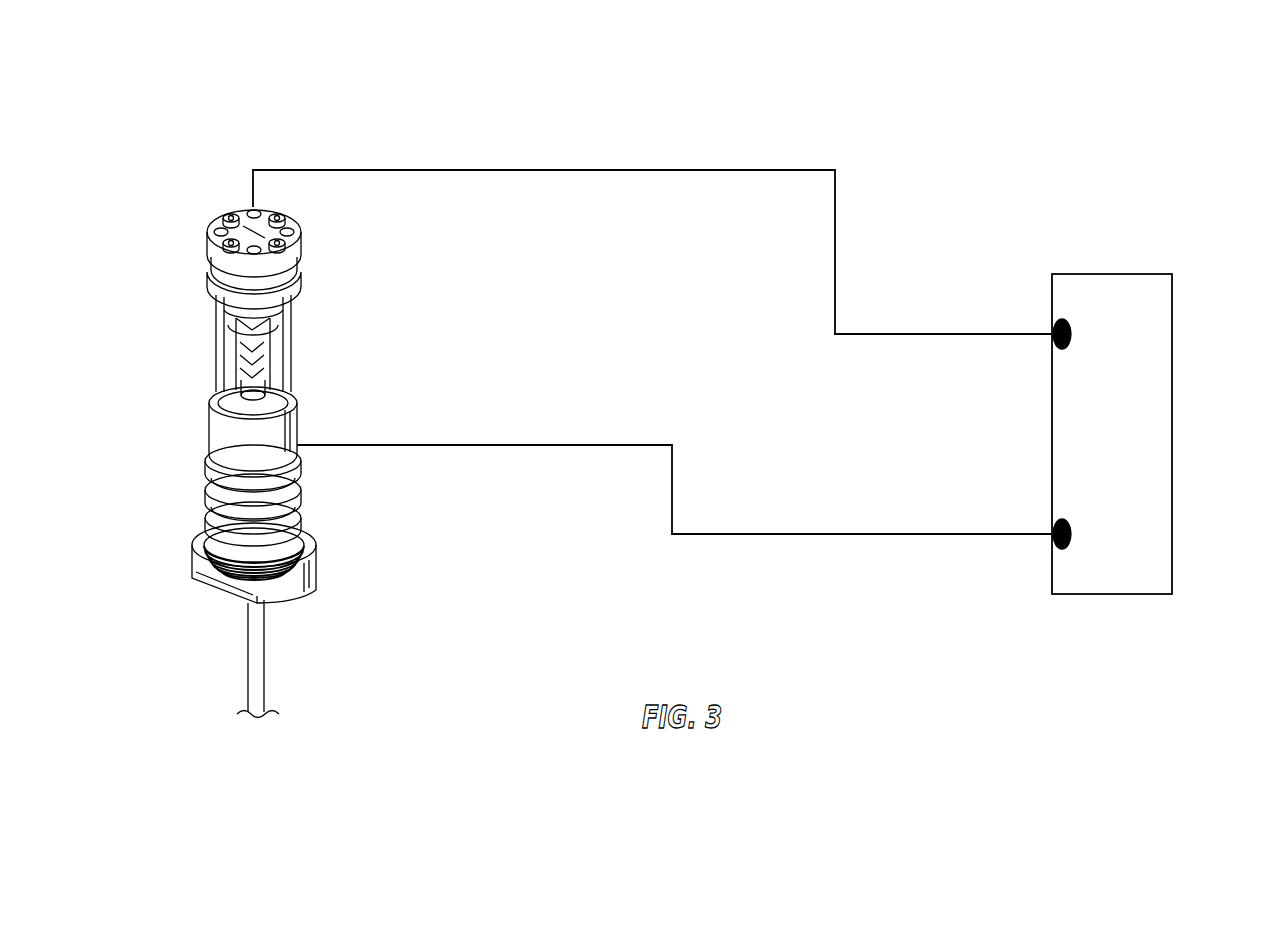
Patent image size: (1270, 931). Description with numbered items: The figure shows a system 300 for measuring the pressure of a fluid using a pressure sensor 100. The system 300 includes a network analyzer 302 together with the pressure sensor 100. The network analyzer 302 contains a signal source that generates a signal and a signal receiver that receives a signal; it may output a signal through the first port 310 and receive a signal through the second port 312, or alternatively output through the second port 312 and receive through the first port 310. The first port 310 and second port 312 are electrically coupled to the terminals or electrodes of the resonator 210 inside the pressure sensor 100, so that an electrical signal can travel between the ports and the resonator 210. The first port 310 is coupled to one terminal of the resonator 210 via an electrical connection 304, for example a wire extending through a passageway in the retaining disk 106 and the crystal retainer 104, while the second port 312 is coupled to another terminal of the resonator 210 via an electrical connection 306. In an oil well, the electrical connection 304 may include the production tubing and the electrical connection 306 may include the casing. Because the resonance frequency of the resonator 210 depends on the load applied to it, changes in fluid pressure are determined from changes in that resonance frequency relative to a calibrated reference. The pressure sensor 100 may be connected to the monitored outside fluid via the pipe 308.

The pressure sensor 100 is at (182, 428).
The crystal retainer 104 is at (292, 357).
The retaining disk 106 is at (207, 238).
The resonator 210 is at (238, 334).
The system 300 is at (1124, 148).
The network analyzer 302 is at (1112, 274).
The electrical connection 304 is at (544, 170).
The electrical connection 306 is at (862, 534).
The pipe 308 is at (248, 665).
The first port 310 is at (1058, 350).
The second port 312 is at (1059, 551).